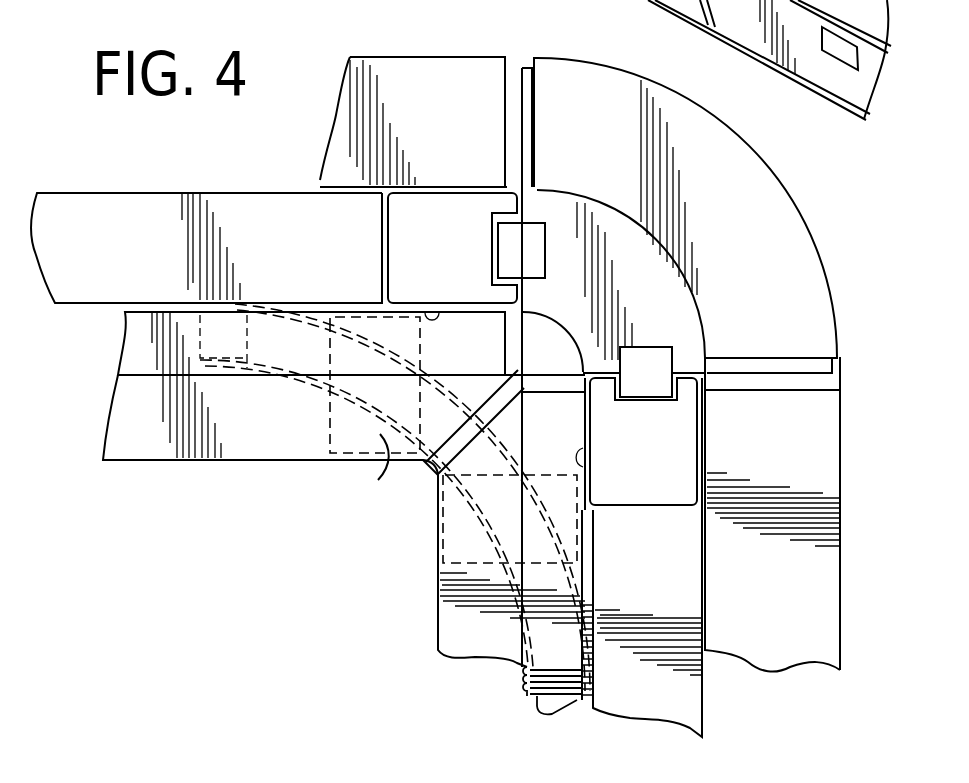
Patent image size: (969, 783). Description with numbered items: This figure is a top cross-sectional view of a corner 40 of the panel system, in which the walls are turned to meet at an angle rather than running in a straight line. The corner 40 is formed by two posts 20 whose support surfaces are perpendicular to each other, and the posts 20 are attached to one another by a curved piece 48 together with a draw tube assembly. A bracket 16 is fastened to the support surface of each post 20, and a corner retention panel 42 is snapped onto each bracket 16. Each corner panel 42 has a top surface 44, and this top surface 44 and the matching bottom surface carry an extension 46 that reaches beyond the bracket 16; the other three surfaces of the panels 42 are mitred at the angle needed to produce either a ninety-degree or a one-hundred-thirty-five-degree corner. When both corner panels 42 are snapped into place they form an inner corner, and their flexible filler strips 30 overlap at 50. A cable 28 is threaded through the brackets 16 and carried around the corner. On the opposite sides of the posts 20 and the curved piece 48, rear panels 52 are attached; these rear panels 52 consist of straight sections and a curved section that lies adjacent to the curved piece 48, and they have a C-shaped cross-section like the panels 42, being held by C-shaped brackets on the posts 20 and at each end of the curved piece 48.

The bracket 16 is at (458, 527).
The post 20 is at (446, 244).
The cable 28 is at (547, 697).
The flexible filler strip 30 is at (520, 67).
The corner 40 is at (358, 565).
The corner retention panel 42 is at (275, 443).
The top surface 44 is at (140, 347).
The extension 46 is at (482, 356).
The curved piece 48 is at (659, 292).
The overlap of filler strips 50 is at (510, 378).
The rear panel 52 is at (405, 56).